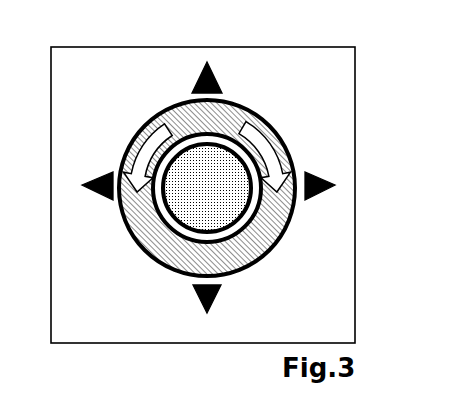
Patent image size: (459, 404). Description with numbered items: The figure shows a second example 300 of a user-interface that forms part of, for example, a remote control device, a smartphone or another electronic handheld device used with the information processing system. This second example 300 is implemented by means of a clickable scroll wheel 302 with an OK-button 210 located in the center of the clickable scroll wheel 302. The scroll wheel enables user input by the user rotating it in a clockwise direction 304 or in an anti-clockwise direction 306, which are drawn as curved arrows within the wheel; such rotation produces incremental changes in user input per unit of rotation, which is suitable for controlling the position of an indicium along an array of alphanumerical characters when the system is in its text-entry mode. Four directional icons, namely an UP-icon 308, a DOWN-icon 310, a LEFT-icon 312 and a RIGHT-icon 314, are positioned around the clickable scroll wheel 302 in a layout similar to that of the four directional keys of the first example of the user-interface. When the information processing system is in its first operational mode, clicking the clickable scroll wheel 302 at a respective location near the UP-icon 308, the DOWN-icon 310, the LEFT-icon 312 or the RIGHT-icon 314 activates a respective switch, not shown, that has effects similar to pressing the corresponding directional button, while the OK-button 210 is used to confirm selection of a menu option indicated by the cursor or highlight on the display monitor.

The second example of the user-interface 300 is at (105, 376).
The clickable scroll wheel 302 is at (145, 252).
The OK-button 210 is at (232, 208).
The clockwise direction 304 is at (268, 140).
The anti-clockwise direction 306 is at (140, 150).
The UP-icon 308 is at (217, 83).
The DOWN-icon 310 is at (198, 295).
The LEFT-icon 312 is at (93, 187).
The RIGHT-icon 314 is at (335, 160).